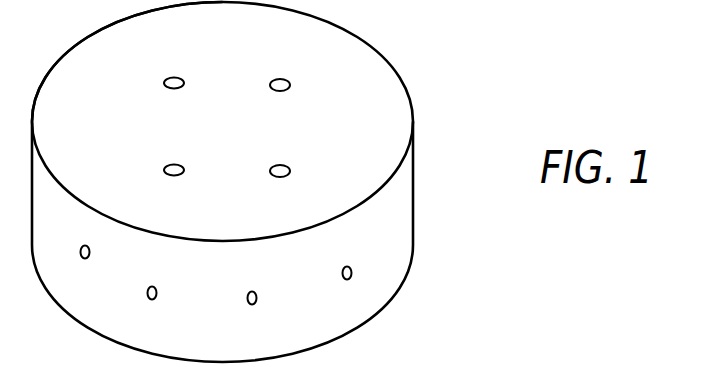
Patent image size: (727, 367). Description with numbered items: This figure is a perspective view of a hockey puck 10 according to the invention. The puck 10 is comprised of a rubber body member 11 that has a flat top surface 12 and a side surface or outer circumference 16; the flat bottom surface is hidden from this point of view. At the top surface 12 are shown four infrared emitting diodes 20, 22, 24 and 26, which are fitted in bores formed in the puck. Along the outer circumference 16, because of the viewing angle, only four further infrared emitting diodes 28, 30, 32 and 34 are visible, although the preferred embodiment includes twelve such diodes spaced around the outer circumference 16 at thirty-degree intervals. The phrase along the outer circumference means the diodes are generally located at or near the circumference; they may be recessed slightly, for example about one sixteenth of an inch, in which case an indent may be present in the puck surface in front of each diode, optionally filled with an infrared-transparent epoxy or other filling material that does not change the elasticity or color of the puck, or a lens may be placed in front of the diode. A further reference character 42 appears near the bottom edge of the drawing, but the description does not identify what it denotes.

The puck 10 is at (347, 183).
The rubber body member 11 is at (126, 62).
The flat top surface 12 is at (392, 108).
The side surface or outer circumference 16 is at (403, 222).
The infrared emitting diode 20 is at (192, 63).
The infrared emitting diode 22 is at (289, 89).
The infrared emitting diode 24 is at (192, 154).
The infrared emitting diode 26 is at (289, 175).
The infrared emitting diode 28 is at (102, 270).
The infrared emitting diode 30 is at (169, 310).
The infrared emitting diode 32 is at (270, 315).
The infrared emitting diode 34 is at (363, 288).
The bottom element 42 is at (386, 363).